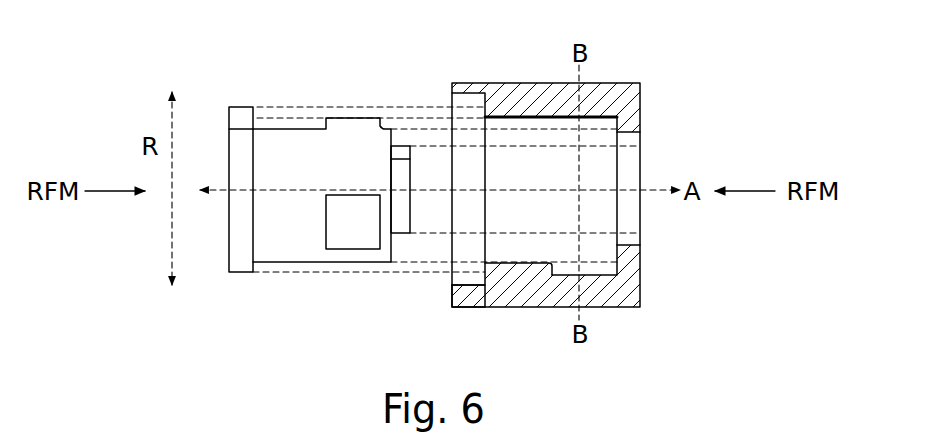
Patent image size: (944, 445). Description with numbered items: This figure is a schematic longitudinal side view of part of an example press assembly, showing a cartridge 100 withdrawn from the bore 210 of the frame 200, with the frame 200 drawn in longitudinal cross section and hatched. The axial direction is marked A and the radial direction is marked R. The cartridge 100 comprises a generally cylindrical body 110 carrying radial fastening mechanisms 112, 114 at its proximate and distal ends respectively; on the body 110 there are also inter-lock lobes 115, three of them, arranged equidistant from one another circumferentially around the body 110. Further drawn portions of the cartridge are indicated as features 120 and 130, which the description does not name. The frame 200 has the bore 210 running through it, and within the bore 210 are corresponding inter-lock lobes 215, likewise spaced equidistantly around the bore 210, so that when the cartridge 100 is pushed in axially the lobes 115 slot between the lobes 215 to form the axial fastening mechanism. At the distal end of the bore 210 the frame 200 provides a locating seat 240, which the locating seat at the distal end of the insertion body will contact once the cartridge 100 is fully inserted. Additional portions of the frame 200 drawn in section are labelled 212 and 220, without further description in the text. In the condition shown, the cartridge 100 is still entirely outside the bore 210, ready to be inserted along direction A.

The cartridge 100 is at (354, 78).
The body 110 is at (280, 232).
The radial fastening mechanism 112 is at (242, 136).
The radial fastening mechanism 114 is at (398, 150).
The inter-lock lobes 115 is at (358, 237).
The rear flange 120 is at (242, 253).
The front flange 130 is at (398, 220).
The frame 200 is at (550, 90).
The bore 210 is at (522, 143).
The housing flange 212 is at (465, 133).
The inter-lock lobes 215 is at (523, 270).
The housing bottom flange portion 220 is at (465, 290).
The locating seat 240 is at (612, 252).